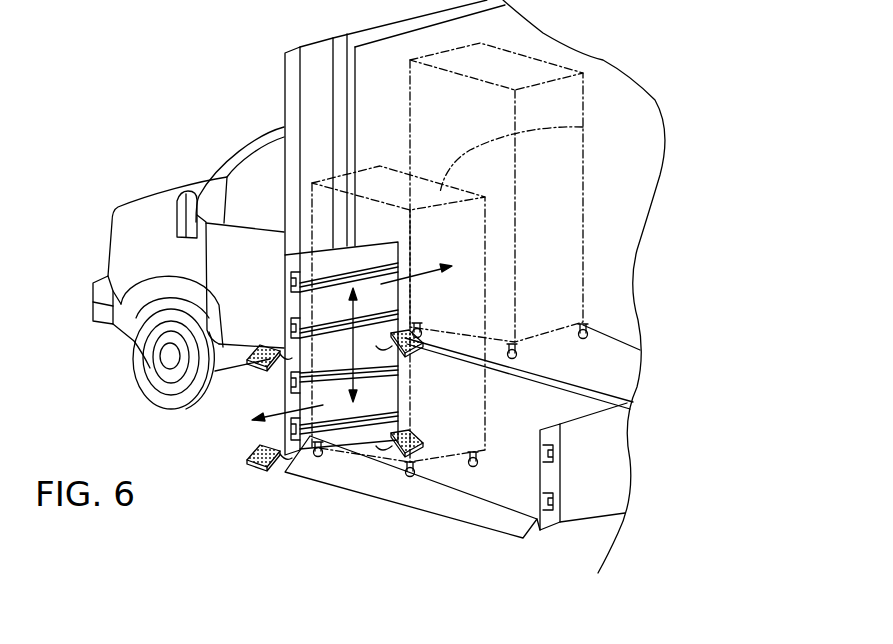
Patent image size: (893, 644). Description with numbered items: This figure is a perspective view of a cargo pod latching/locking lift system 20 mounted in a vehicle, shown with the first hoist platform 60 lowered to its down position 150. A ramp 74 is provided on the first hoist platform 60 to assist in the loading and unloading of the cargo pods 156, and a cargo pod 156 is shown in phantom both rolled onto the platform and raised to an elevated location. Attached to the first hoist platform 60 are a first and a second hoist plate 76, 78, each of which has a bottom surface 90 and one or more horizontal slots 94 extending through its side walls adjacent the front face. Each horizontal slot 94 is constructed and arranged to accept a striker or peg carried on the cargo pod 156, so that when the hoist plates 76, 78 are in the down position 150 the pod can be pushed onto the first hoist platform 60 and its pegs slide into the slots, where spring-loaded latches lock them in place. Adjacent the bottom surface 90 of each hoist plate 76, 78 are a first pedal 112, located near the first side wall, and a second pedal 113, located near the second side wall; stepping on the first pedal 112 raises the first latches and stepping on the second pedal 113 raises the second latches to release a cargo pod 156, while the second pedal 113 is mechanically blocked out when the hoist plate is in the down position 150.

The vehicle cargo handling system 20 is at (191, 102).
The first hoist platform 60 is at (510, 497).
The ramp 74 is at (370, 486).
The first hoist plate 76 is at (294, 302).
The second hoist plate 78 is at (597, 433).
The bottom surface 90 is at (297, 452).
The horizontal slot 94 is at (284, 268).
The first pedal 112 is at (262, 366).
The second pedal 113 is at (420, 347).
The down position 150 is at (542, 531).
The cargo pod 156 is at (558, 160).